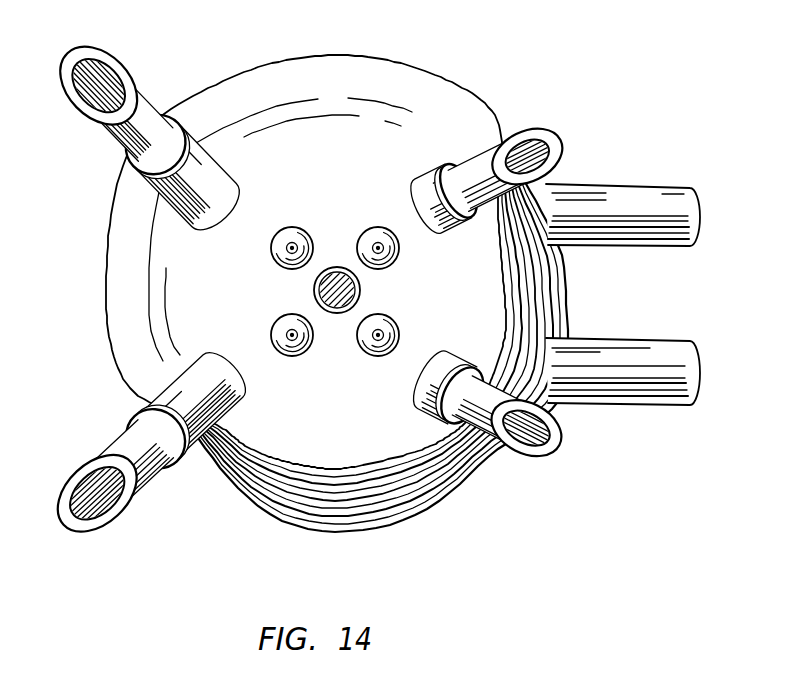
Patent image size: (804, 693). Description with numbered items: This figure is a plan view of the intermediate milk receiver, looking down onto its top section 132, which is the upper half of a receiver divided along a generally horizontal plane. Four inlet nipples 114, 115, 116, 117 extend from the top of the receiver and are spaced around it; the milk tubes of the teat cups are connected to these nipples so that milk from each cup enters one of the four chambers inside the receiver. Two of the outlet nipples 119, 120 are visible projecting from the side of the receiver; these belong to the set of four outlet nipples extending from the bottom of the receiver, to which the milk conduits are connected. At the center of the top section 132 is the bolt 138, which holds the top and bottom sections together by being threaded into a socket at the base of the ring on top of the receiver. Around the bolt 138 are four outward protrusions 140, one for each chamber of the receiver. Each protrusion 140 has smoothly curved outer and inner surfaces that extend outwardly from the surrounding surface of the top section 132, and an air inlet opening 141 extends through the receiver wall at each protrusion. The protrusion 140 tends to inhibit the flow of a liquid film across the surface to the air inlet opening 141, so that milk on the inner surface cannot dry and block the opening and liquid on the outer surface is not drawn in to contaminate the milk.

The top section 132 is at (395, 90).
The bolt 138 is at (330, 278).
The outward protrusion 140 is at (378, 357).
The air inlet opening 141 is at (380, 334).
The inlet nipple 116 is at (143, 118).
The inlet nipple 114 is at (497, 147).
The inlet nipple 117 is at (207, 472).
The inlet nipple 115 is at (483, 440).
The outlet nipple 119 is at (643, 200).
The outlet nipple 120 is at (664, 358).